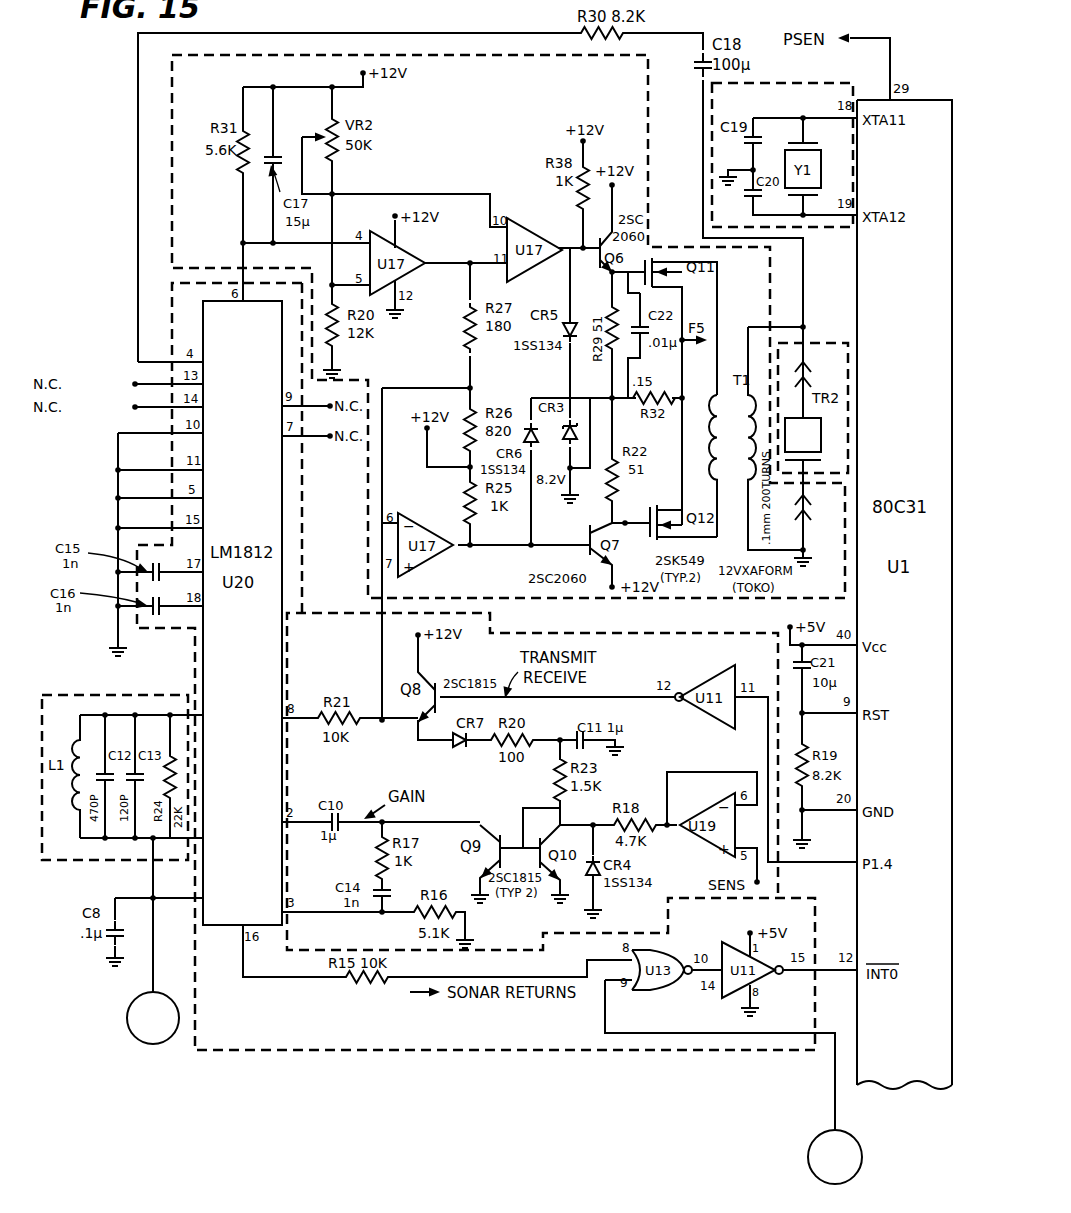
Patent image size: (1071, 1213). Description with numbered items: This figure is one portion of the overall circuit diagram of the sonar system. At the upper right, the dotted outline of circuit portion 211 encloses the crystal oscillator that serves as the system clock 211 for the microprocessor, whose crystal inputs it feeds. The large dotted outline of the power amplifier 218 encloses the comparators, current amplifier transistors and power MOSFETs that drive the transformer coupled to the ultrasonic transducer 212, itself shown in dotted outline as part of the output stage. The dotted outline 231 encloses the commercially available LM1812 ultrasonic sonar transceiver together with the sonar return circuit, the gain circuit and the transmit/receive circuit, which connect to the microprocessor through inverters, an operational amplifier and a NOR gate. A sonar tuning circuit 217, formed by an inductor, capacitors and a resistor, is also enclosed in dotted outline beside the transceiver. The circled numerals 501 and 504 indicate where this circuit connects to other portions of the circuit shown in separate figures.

The system clock 211 is at (778, 76).
The ultrasonic transducer 212 is at (804, 333).
The sonar tuning circuit 217 is at (102, 683).
The power amplifier 218 is at (160, 138).
The sonar return circuit, gain circuit and transmit/receive circuit 231 is at (160, 325).
The circled connection numeral 501 is at (835, 1108).
The circled connection numeral 504 is at (153, 971).